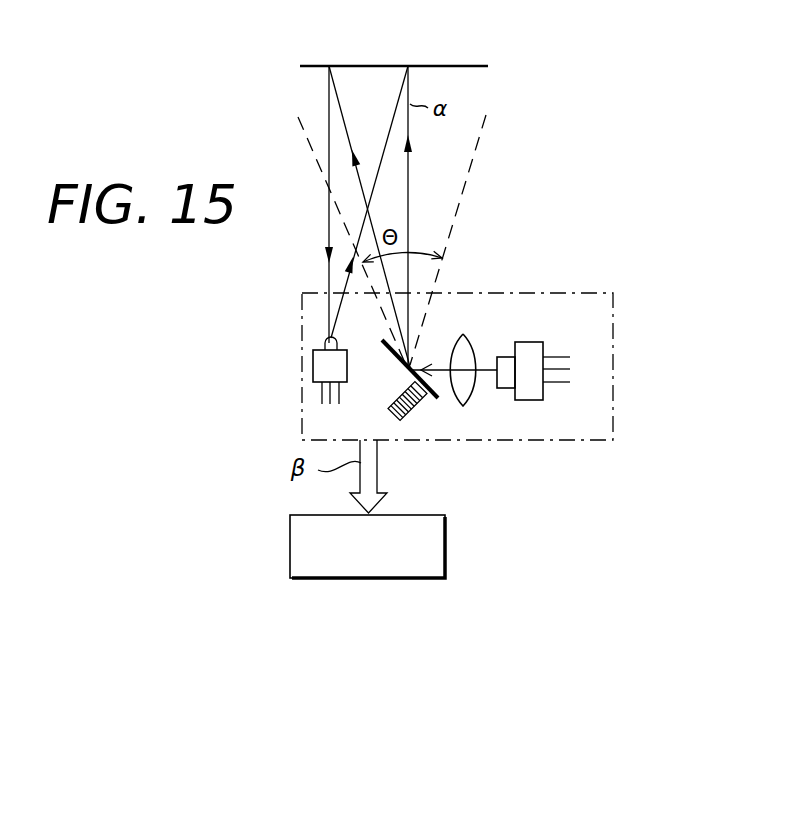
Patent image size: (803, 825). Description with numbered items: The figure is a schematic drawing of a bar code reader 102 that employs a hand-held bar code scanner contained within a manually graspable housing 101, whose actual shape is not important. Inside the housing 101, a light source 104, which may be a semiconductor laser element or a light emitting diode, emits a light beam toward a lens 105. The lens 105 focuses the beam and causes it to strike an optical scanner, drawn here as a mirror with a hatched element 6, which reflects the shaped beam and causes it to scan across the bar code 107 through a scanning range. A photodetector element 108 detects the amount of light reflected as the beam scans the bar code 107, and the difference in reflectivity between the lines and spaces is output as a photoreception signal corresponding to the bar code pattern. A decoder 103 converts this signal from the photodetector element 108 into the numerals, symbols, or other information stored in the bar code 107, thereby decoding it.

The bar code 107 is at (388, 63).
The housing 101 is at (602, 322).
The photodetector element 108 is at (312, 371).
The grating 6 is at (422, 410).
The lens 105 is at (466, 348).
The light source 104 is at (527, 353).
The bar code reader 102 is at (476, 466).
The decoder 103 is at (447, 566).